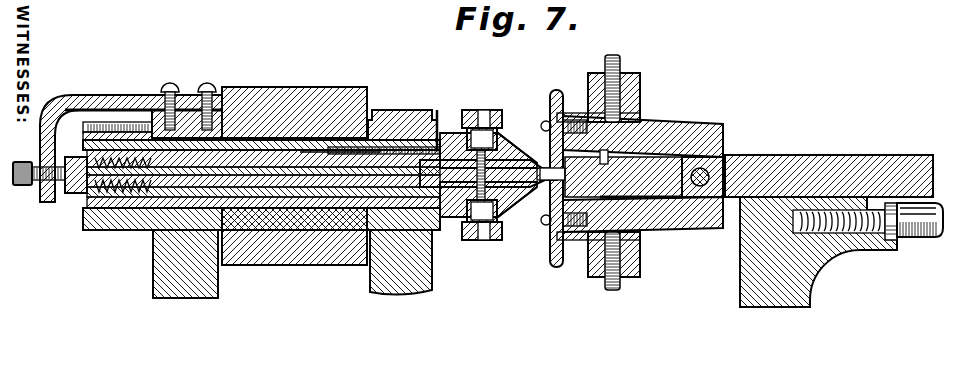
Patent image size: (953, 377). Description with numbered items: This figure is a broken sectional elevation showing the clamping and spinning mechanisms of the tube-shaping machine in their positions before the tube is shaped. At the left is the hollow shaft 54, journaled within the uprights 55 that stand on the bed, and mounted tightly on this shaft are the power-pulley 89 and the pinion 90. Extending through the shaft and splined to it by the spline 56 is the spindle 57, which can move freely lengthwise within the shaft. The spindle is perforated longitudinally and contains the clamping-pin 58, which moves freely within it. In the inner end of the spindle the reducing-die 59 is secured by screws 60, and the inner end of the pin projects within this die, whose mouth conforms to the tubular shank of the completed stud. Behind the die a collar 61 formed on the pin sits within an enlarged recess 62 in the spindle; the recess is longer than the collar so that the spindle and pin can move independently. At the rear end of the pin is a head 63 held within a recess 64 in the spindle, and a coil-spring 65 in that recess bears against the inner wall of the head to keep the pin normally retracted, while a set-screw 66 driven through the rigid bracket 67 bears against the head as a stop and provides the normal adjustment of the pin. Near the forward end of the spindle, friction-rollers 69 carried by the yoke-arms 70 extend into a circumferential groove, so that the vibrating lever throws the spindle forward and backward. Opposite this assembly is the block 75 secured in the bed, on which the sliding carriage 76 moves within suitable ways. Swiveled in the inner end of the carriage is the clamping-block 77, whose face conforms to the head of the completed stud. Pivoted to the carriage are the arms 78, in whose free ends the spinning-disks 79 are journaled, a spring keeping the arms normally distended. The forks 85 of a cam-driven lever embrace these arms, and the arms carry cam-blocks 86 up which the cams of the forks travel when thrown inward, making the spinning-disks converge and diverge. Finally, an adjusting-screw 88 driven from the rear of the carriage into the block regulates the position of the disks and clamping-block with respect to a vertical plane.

The shaft 54 is at (130, 120).
The uprights 55 is at (160, 258).
The spline 56 is at (400, 147).
The spindle 57 is at (240, 157).
The clamping-pin 58 is at (297, 180).
The reducing-die 59 is at (540, 185).
The screws 60 is at (512, 143).
The collar 61 is at (445, 185).
The enlarged recess 62 is at (480, 200).
The head 63 is at (70, 157).
The recess 64 is at (100, 190).
The coil-spring 65 is at (100, 202).
The set-screw 66 is at (13, 170).
The rigid bracket 67 is at (40, 135).
The friction-rollers 69 is at (490, 140).
The yoke-arms 70 is at (470, 112).
The block 75 is at (812, 286).
The sliding carriage 76 is at (805, 160).
The clamping-block 77 is at (590, 190).
The arms 78 is at (675, 236).
The spinning-disks 79 is at (556, 100).
The forks 85 is at (640, 80).
The cam-blocks 86 is at (633, 97).
The adjusting-screw 88 is at (873, 233).
The power-pulley 89 is at (313, 97).
The pinion 90 is at (93, 122).